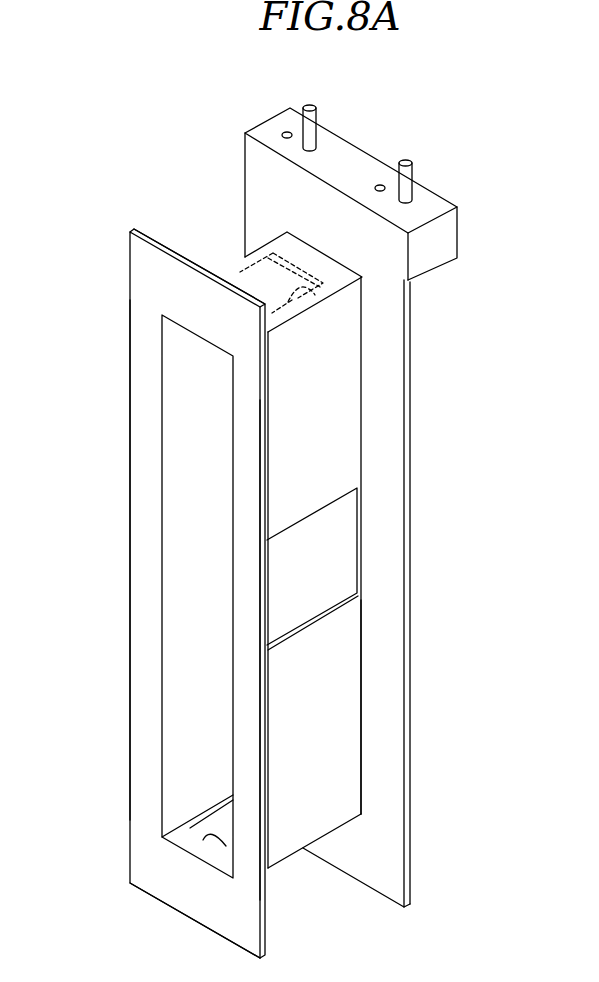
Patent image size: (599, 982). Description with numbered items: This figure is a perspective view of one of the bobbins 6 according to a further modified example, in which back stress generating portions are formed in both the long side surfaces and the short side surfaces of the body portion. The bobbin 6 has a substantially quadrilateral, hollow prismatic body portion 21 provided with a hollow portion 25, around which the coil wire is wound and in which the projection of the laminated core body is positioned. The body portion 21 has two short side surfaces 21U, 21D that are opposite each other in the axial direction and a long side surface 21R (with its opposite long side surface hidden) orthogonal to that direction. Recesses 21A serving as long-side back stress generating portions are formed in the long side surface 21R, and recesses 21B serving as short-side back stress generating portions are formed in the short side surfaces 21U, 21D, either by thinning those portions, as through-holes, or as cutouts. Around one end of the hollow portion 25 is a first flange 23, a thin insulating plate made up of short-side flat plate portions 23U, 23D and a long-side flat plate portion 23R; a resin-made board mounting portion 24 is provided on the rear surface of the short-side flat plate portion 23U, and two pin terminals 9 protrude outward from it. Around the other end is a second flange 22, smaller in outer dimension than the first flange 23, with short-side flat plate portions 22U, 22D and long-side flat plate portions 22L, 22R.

The bobbin 6 is at (100, 183).
The pin terminal 9 is at (310, 105).
The body portion 21 is at (238, 263).
The short side surface 21U is at (326, 272).
The recess (short-side recess) 21B is at (322, 303).
The recess (long-side recess) 21A is at (325, 570).
The long side surface 21R is at (333, 792).
The short side surface 21D is at (175, 829).
The second flange 22 is at (125, 432).
The short-side flat plate portion 22U is at (153, 283).
The long-side flat plate portion 22L is at (138, 638).
The long-side flat plate portion 22R is at (245, 757).
The short-side flat plate portion 22D is at (188, 903).
The first flange 23 is at (417, 492).
The short-side flat plate portion 23U is at (258, 161).
The long-side flat plate portion 23R is at (407, 750).
The short-side flat plate portion 23D is at (390, 875).
The board mounting portion 24 is at (253, 112).
The hollow portion 25 is at (212, 579).